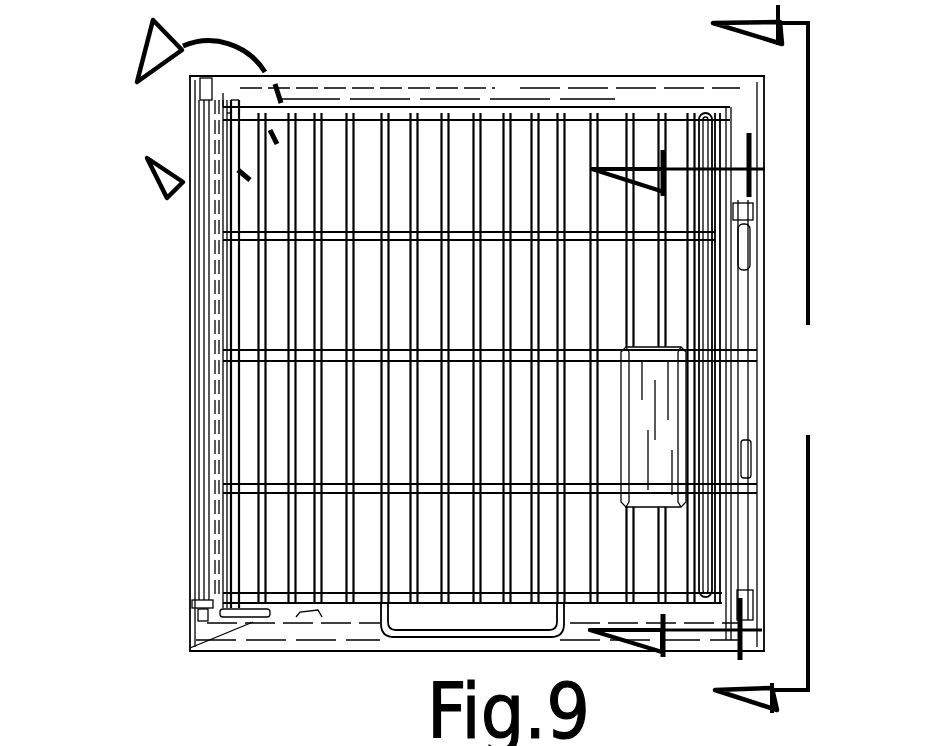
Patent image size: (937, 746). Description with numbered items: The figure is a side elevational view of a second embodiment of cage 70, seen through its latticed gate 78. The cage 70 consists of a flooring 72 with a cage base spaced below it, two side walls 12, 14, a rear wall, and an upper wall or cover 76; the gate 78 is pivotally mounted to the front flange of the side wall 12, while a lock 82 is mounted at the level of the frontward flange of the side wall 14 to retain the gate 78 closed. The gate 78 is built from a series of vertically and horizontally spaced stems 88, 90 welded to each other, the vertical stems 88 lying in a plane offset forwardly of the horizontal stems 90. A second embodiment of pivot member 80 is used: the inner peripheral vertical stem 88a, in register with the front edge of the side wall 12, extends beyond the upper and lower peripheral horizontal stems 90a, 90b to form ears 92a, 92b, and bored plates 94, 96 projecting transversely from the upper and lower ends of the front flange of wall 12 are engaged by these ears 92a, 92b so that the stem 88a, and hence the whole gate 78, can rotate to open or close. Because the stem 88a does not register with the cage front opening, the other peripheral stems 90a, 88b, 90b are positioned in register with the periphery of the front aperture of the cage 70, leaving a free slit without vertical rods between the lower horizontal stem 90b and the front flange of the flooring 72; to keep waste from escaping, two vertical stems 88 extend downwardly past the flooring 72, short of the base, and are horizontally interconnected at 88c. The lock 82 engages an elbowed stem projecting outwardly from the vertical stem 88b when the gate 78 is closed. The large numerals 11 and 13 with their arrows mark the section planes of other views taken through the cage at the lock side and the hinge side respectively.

The section line 11 is at (794, 362).
The side wall 12 is at (188, 460).
The section line 13 is at (199, 109).
The side wall 14 is at (767, 305).
The cage 70 is at (182, 358).
The flooring 72 is at (463, 645).
The upper wall or cover 76 is at (434, 75).
The latticed gate 78 is at (197, 293).
The pivot member 80 is at (193, 509).
The lock 82 is at (745, 411).
The vertical stems 88 is at (187, 347).
The peripheral vertical stem 88a is at (196, 392).
The vertical stem 88b is at (767, 277).
The horizontal interconnection of downward stems 88c is at (353, 640).
The horizontal stems 90 is at (558, 200).
The upper peripheral horizontal stem 90a is at (375, 118).
The lower peripheral horizontal stem 90b is at (217, 627).
The ear 92a is at (207, 92).
The ear 92b is at (200, 620).
The bored plate 94 is at (223, 96).
The bored plate 96 is at (200, 612).